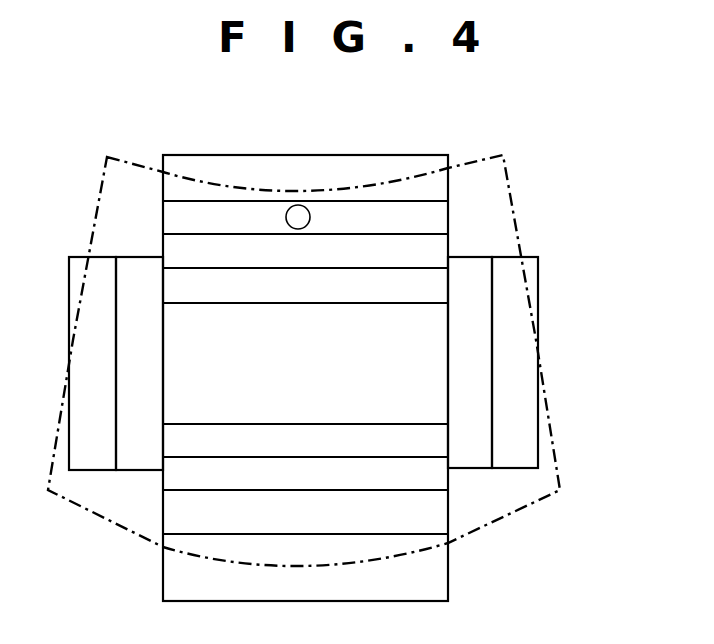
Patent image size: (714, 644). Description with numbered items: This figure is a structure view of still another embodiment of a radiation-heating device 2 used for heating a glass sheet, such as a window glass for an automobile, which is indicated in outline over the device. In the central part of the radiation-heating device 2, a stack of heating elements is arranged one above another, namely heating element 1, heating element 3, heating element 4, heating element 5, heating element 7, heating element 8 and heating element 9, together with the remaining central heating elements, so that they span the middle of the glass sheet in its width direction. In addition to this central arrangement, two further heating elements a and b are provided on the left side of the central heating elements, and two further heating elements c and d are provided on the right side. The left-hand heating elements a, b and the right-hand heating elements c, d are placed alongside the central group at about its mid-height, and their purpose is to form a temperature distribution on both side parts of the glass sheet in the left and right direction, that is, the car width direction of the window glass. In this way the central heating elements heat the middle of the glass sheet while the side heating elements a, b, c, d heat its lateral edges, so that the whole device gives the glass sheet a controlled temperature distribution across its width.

The laminated body 2 is at (305, 341).
The heating element 1 is at (305, 182).
The heating element 3 is at (305, 253).
The heating element 4 is at (305, 288).
The heating element 5 is at (305, 387).
The heating element 7 is at (305, 476).
The heating element 8 is at (305, 517).
The heating element 9 is at (305, 586).
The heating element a is at (92, 363).
The heating element b is at (139, 363).
The heating element c is at (470, 362).
The heating element d is at (515, 362).